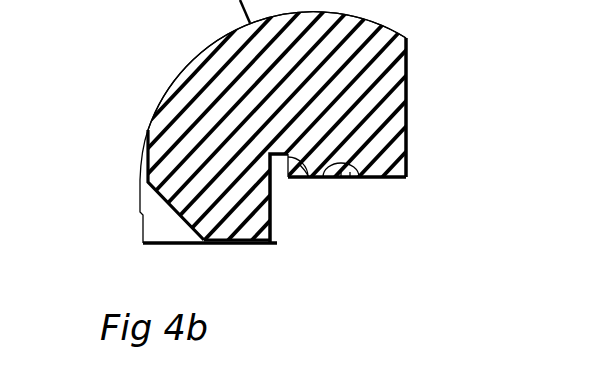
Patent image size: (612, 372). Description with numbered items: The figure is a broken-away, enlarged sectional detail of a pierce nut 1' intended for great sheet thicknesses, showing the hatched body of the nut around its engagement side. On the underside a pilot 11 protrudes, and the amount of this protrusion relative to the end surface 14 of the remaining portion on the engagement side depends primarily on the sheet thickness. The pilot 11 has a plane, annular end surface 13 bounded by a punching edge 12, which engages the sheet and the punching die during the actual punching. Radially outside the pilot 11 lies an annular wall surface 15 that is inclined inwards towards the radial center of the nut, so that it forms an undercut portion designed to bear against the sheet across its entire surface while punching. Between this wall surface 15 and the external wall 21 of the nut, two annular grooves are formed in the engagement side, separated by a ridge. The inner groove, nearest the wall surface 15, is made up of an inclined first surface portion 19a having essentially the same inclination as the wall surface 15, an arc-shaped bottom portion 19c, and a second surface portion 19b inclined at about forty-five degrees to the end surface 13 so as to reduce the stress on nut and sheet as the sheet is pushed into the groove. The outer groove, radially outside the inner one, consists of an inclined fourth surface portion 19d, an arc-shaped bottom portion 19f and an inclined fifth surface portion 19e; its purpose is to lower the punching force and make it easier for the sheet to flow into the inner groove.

The pierce nut 1' is at (239, 71).
The pilot 11 is at (226, 207).
The punching edge 12 is at (280, 217).
The end surface 13 is at (235, 249).
The end surface 14 is at (395, 184).
The wall surface 15 is at (283, 180).
The first surface portion 19a is at (278, 170).
The second surface portion 19b is at (313, 176).
The arc-shaped bottom portion 19c is at (300, 176).
The fourth surface portion 19d is at (342, 172).
The fifth surface portion 19e is at (360, 178).
The arc-shaped bottom portion 19f is at (350, 178).
The external wall 21 is at (411, 110).